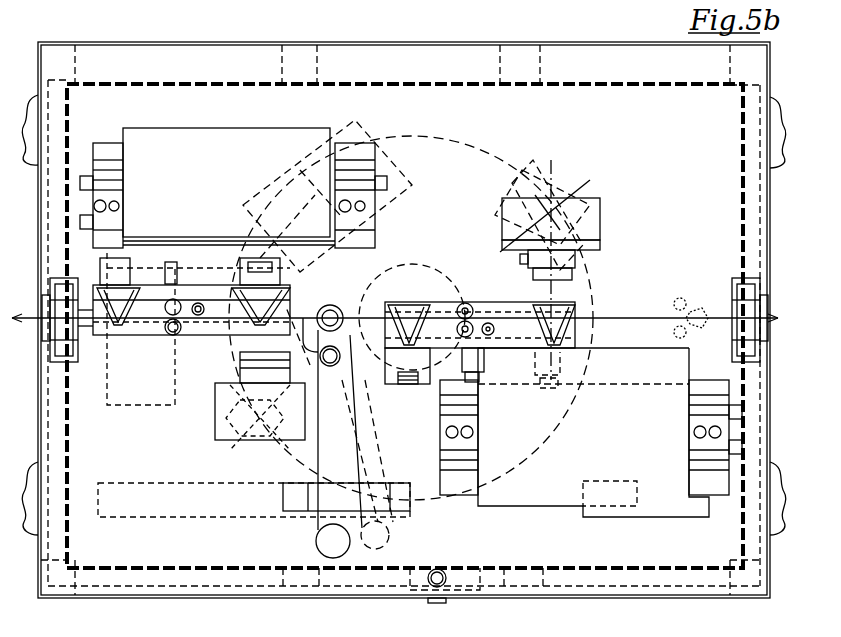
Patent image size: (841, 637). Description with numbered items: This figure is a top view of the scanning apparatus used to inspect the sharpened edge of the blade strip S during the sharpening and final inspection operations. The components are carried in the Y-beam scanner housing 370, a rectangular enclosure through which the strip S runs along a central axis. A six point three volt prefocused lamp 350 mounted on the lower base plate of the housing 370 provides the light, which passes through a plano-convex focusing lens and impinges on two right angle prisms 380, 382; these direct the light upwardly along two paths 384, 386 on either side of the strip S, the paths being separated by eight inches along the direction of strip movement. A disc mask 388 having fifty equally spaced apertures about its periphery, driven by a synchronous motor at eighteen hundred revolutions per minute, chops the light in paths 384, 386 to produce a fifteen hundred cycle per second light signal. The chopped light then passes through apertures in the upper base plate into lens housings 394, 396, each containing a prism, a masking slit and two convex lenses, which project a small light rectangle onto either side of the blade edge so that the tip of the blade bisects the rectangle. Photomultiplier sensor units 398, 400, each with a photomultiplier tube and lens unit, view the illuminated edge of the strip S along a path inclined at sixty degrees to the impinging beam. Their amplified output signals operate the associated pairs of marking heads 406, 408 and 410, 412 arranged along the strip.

The Y-beam scanner housing 370 is at (637, 572).
The right angle prism 380 is at (575, 158).
The right angle prism 382 is at (282, 466).
The light path 384 is at (540, 215).
The light path 386 is at (262, 428).
The disc mask 388 is at (482, 158).
The lens housing 394 is at (592, 222).
The lens housing 396 is at (215, 413).
The photomultiplier sensor unit 398 is at (625, 498).
The photomultiplier sensor unit 400 is at (228, 138).
The marking head 406 is at (572, 325).
The marking head 408 is at (345, 310).
The marking head 410 is at (240, 332).
The marking head 412 is at (103, 332).
The prefocused lamp 350 is at (380, 345).
The strip S is at (772, 318).